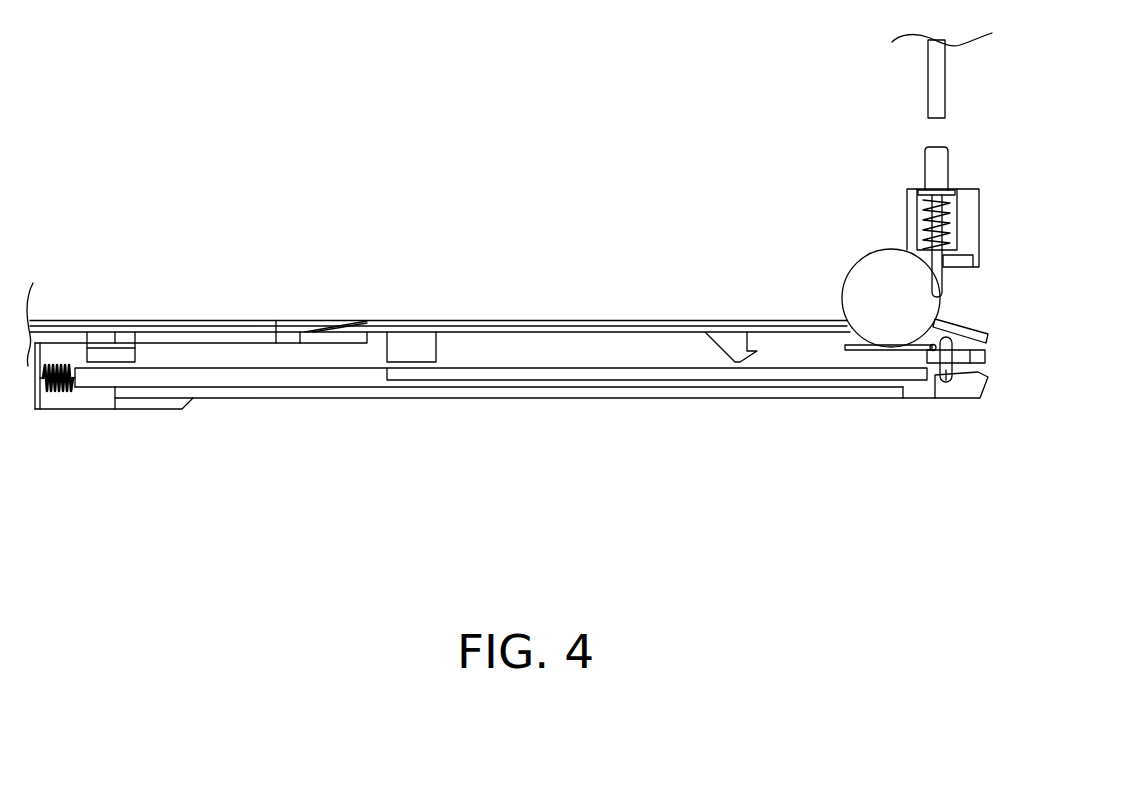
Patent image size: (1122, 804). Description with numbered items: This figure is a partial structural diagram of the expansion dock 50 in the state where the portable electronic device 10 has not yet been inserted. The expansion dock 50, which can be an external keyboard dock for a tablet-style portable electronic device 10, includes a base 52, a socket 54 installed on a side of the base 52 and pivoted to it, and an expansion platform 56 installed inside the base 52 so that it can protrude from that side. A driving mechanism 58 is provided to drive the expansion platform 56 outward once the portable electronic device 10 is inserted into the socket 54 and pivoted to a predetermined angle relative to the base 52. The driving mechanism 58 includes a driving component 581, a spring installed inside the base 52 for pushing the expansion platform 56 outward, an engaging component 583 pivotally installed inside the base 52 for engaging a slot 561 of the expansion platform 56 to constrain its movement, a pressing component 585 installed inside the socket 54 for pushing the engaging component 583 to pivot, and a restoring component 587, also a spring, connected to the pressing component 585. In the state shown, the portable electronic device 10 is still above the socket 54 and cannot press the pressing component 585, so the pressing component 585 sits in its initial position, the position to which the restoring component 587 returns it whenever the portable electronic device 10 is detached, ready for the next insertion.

The portable electronic device 10 is at (938, 87).
The expansion dock 50 is at (385, 92).
The base 52 is at (417, 320).
The socket 54 is at (982, 203).
The expansion platform 56 is at (606, 425).
The driving mechanism 58 is at (1035, 352).
The slot 561 is at (962, 388).
The driving component 581 is at (65, 393).
The engaging component 583 is at (940, 400).
The pressing component 585 is at (940, 283).
The restoring component 587 is at (950, 237).